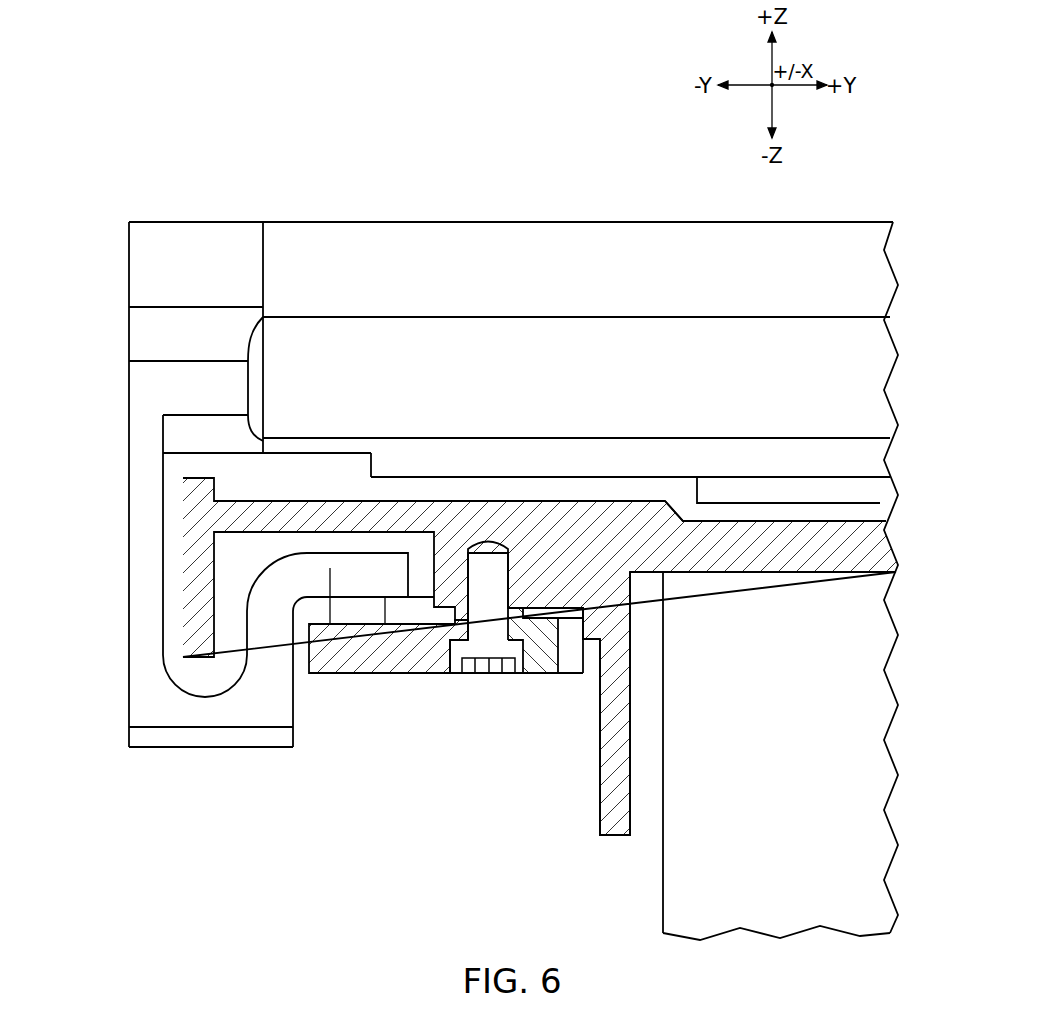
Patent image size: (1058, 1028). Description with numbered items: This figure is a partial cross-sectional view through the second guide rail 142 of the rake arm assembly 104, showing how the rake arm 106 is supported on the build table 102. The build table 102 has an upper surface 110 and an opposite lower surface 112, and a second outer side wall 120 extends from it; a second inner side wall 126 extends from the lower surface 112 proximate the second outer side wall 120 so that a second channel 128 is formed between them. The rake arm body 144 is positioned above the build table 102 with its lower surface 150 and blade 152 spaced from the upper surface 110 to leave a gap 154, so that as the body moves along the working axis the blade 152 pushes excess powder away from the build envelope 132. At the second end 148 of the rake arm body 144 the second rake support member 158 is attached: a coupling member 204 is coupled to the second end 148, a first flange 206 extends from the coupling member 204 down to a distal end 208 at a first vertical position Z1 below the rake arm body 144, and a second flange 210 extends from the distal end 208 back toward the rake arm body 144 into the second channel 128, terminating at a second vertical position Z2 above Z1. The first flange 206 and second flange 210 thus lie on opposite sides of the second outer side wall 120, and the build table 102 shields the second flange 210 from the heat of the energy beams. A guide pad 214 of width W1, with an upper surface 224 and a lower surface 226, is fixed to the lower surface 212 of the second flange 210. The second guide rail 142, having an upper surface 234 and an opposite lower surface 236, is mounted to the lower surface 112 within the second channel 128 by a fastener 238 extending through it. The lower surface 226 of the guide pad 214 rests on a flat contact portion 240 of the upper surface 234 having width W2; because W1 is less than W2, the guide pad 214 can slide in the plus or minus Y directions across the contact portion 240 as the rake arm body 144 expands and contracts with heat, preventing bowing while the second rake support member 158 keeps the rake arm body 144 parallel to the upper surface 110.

The build table 102 is at (914, 545).
The rake arm assembly 104 is at (73, 724).
The rake arm 106 is at (582, 83).
The upper surface 110 is at (879, 520).
The lower surface 112 is at (723, 573).
The second outer side wall 120 is at (180, 566).
The second inner side wall 126 is at (600, 780).
The second channel 128 is at (489, 733).
The build envelope 132 is at (663, 902).
The second guide rail 142 is at (500, 737).
The rake arm body 144 is at (851, 232).
The second end 148 is at (263, 238).
The lower surface 150 is at (652, 476).
The blade 152 is at (752, 502).
The gap 154 is at (782, 524).
The second rake support member 158 is at (207, 383).
The coupling member 204 is at (129, 260).
The first flange 206 is at (128, 617).
The distal end 208 is at (173, 742).
The second flange 210 is at (268, 576).
The lower surface 212 is at (345, 597).
The guide pad 214 is at (343, 614).
The upper surface 224 is at (380, 622).
The lower surface 226 is at (376, 616).
The upper surface 234 is at (548, 607).
The lower surface 236 is at (538, 675).
The fastener 238 is at (480, 543).
The contact portion 240 is at (300, 600).
The width of guide pad W1 is at (408, 573).
The width of contact portion W2 is at (448, 673).
The first vertical position Z1 is at (455, 747).
The second vertical position Z2 is at (410, 597).